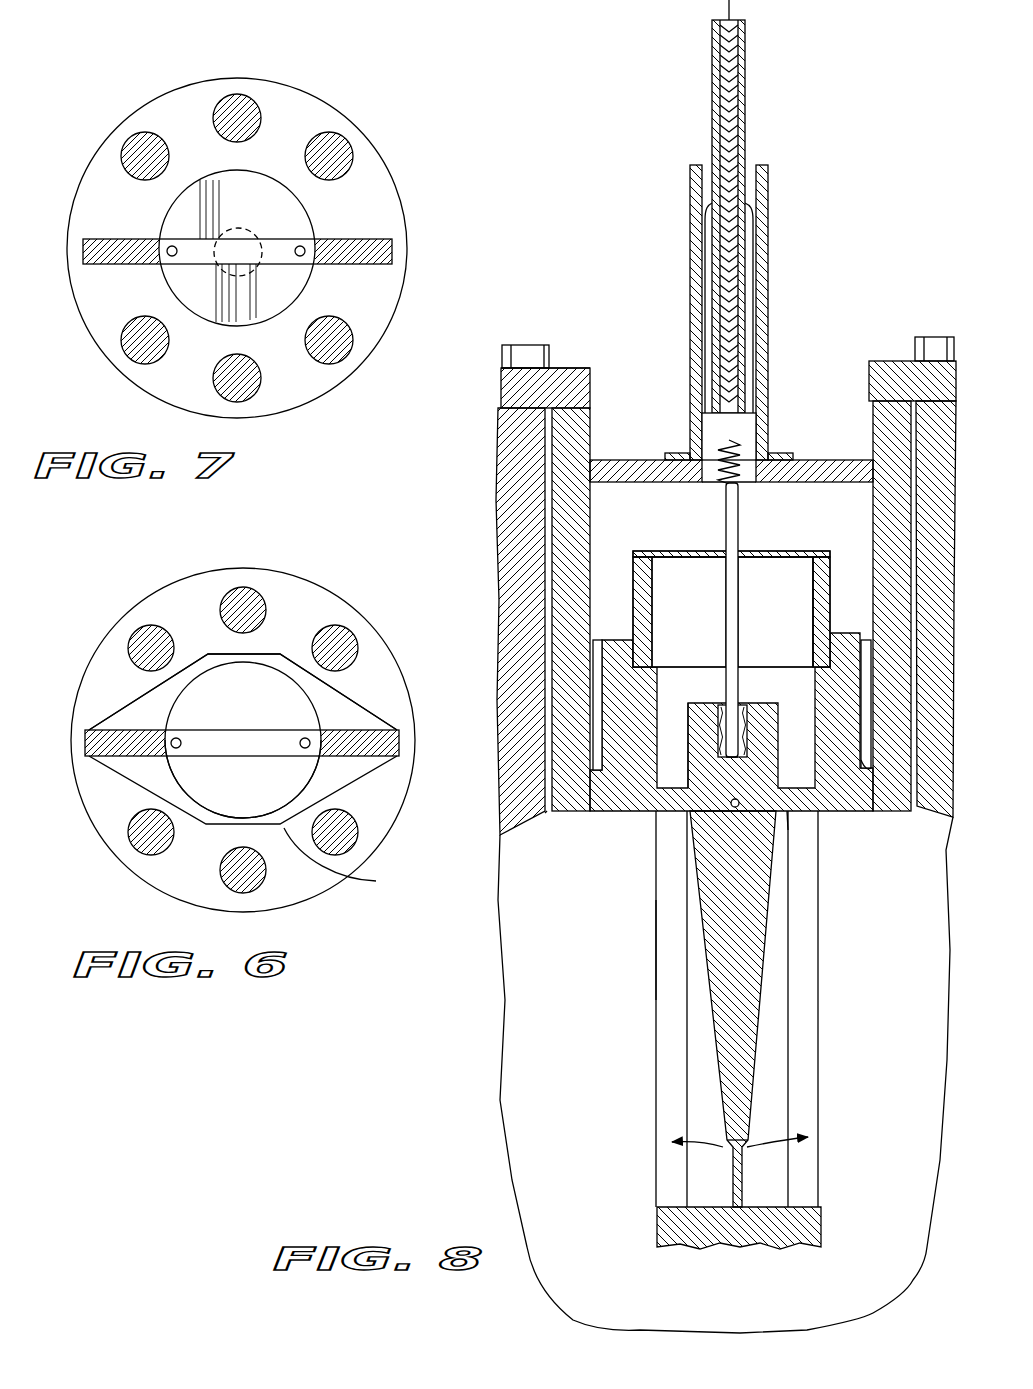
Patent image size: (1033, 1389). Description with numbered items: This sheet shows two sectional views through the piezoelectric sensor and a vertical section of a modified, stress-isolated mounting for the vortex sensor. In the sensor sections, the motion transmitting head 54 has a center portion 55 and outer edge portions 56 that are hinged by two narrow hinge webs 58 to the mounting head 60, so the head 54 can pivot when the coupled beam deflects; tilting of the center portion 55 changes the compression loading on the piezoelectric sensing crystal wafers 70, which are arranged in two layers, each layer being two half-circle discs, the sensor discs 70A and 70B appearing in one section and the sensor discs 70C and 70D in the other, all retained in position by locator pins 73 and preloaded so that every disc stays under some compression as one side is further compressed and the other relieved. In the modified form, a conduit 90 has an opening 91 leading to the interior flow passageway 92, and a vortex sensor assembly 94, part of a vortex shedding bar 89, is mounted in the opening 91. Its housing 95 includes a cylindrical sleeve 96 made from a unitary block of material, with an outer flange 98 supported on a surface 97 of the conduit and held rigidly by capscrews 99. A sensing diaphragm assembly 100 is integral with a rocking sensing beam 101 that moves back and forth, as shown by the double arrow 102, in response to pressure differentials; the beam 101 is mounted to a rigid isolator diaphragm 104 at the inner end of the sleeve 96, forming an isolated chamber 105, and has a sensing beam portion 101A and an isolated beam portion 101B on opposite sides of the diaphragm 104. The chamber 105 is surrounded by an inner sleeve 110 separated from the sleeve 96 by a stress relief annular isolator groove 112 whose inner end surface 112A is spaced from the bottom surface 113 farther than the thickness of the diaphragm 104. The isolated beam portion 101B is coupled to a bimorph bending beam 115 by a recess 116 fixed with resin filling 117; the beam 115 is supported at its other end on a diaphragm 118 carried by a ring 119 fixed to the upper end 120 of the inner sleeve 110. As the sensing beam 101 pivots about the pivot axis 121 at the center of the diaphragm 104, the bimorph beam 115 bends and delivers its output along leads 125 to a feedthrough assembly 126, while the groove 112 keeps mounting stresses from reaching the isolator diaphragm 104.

In FIG. 6, the motion transmitting head 54 is at (370, 773).
In FIG. 6, the center portion 55 is at (344, 862).
In FIG. 6, the outer edge portions 56 is at (128, 705).
In FIG. 7, the hinge webs 58 is at (118, 239).
In FIG. 6, the hinge webs 58 is at (368, 730).
In FIG. 7, the mounting head 60 is at (368, 165).
In FIG. 7, the piezoelectric sensing crystal wafers 70 is at (313, 281).
In FIG. 7, the sensor disc 70A is at (258, 182).
In FIG. 7, the sensor disc 70B is at (254, 307).
In FIG. 6, the sensor disc 70C is at (272, 672).
In FIG. 6, the sensor disc 70D is at (260, 799).
In FIG. 7, the locator pins 73 is at (302, 241).
In FIG. 6, the locator pins 73 is at (309, 732).
In FIG. 8, the vortex shedding bar 89 is at (683, 1038).
In FIG. 8, the conduit 90 is at (526, 451).
In FIG. 8, the opening 91 is at (549, 813).
In FIG. 8, the interior flow passageway 92 is at (531, 1011).
In FIG. 8, the vortex sensor assembly 94 is at (647, 990).
In FIG. 8, the housing 95 is at (603, 420).
In FIG. 8, the cylindrical sleeve 96 is at (877, 442).
In FIG. 8, the surface 97 is at (577, 368).
In FIG. 8, the outer flange 98 is at (554, 368).
In FIG. 8, the capscrews 99 is at (531, 344).
In FIG. 8, the sensing diaphragm assembly 100 is at (743, 1183).
In FIG. 8, the rocking sensing beam 101 is at (763, 1019).
In FIG. 8, the sensing beam portion 101A is at (747, 1088).
In FIG. 8, the isolated beam portion 101B is at (688, 753).
In FIG. 8, the double arrow 102 is at (723, 1148).
In FIG. 8, the rigid isolator diaphragm 104 is at (738, 808).
In FIG. 8, the isolated chamber 105 is at (802, 698).
In FIG. 8, the inner sleeve 110 is at (645, 693).
In FIG. 8, the stress relief annular isolator groove 112 is at (597, 640).
In FIG. 8, the inner end surface 112A is at (871, 768).
In FIG. 8, the bottom surface 113 is at (600, 812).
In FIG. 8, the bimorph bending beam 115 is at (725, 683).
In FIG. 8, the recess 116 is at (740, 728).
In FIG. 8, the resin filling 117 is at (738, 748).
In FIG. 8, the diaphragm 118 is at (754, 551).
In FIG. 8, the ring 119 is at (640, 549).
In FIG. 8, the upper end 120 is at (843, 637).
In FIG. 8, the pivot axis 121 is at (794, 812).
In FIG. 8, the leads 125 is at (722, 453).
In FIG. 8, the feedthrough assembly 126 is at (751, 271).